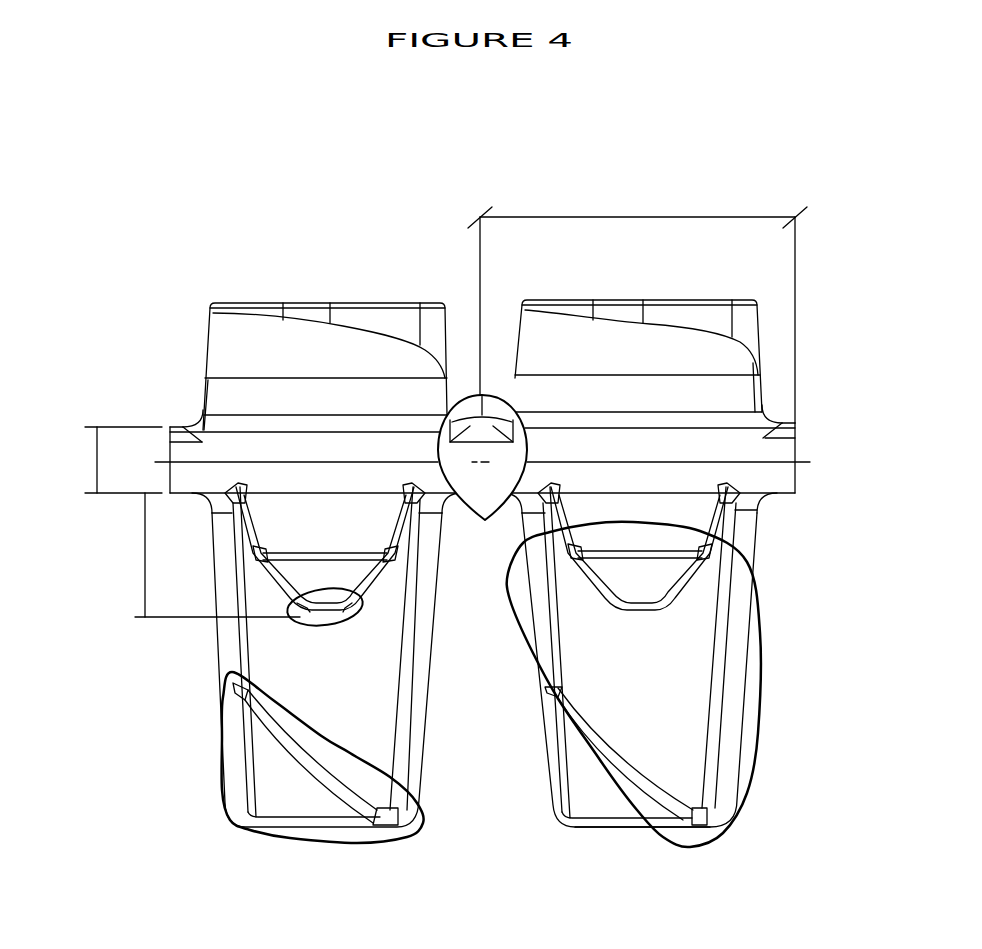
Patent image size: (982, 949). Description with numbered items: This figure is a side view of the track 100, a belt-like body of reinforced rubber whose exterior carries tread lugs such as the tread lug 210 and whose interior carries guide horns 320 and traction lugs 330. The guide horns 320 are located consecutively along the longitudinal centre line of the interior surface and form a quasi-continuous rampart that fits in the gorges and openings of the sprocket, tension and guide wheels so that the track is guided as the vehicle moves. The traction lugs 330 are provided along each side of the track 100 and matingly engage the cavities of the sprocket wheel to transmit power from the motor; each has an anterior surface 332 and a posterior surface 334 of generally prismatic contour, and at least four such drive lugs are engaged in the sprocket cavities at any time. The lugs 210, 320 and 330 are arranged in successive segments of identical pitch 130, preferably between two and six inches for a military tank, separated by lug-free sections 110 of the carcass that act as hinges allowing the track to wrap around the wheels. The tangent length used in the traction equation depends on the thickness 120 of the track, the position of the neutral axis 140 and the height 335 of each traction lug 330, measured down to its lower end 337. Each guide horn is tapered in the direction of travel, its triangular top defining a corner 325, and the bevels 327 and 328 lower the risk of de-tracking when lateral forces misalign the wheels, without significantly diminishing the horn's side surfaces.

The track 100 is at (780, 384).
The hinge section 110 is at (469, 530).
The thickness 120 is at (83, 469).
The pitch 130 is at (652, 204).
The neutral axis 140 is at (188, 471).
The tread lug 210 is at (285, 325).
The guide horn 320 is at (753, 684).
The corner 325 is at (550, 835).
The bevel 327 is at (754, 806).
The bevel 328 is at (206, 815).
The traction lug 330 is at (311, 543).
The anterior surface 332 is at (555, 567).
The posterior surface 334 is at (730, 567).
The height 335 is at (131, 563).
The groove bottom 337 is at (284, 626).